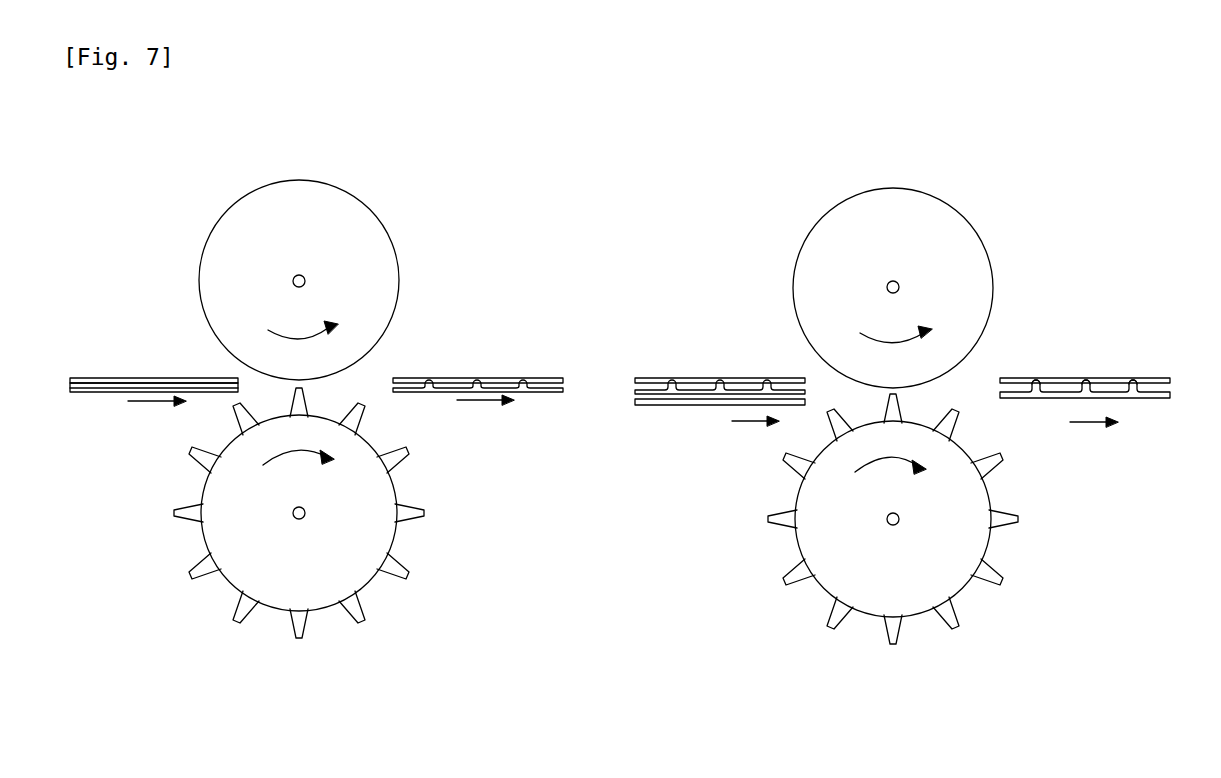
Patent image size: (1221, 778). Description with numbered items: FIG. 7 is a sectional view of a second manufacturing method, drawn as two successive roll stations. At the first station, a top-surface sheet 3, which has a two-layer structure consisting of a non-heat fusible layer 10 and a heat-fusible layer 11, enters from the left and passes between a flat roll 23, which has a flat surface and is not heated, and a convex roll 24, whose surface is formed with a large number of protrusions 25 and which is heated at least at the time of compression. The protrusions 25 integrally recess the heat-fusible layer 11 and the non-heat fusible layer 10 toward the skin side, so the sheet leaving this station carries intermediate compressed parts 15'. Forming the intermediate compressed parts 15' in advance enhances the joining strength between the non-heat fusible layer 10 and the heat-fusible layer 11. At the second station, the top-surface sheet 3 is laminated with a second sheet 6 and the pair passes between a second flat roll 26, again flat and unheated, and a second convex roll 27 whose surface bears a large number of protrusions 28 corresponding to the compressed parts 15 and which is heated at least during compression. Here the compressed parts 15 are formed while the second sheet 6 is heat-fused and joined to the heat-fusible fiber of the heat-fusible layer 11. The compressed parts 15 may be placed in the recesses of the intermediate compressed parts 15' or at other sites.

The top-surface sheet 3 is at (85, 377).
The second sheet 6 is at (707, 406).
The non-heat fusible layer 10 is at (132, 382).
The heat-fusible layer 11 is at (118, 393).
The compressed parts 15 is at (1084, 422).
The intermediate compressed parts 15' is at (403, 422).
The flat roll 23 is at (357, 205).
The convex roll 24 is at (397, 538).
The protrusions 25 is at (174, 514).
The second flat roll 26 is at (948, 200).
The second convex roll 27 is at (967, 588).
The protrusions 28 is at (795, 572).